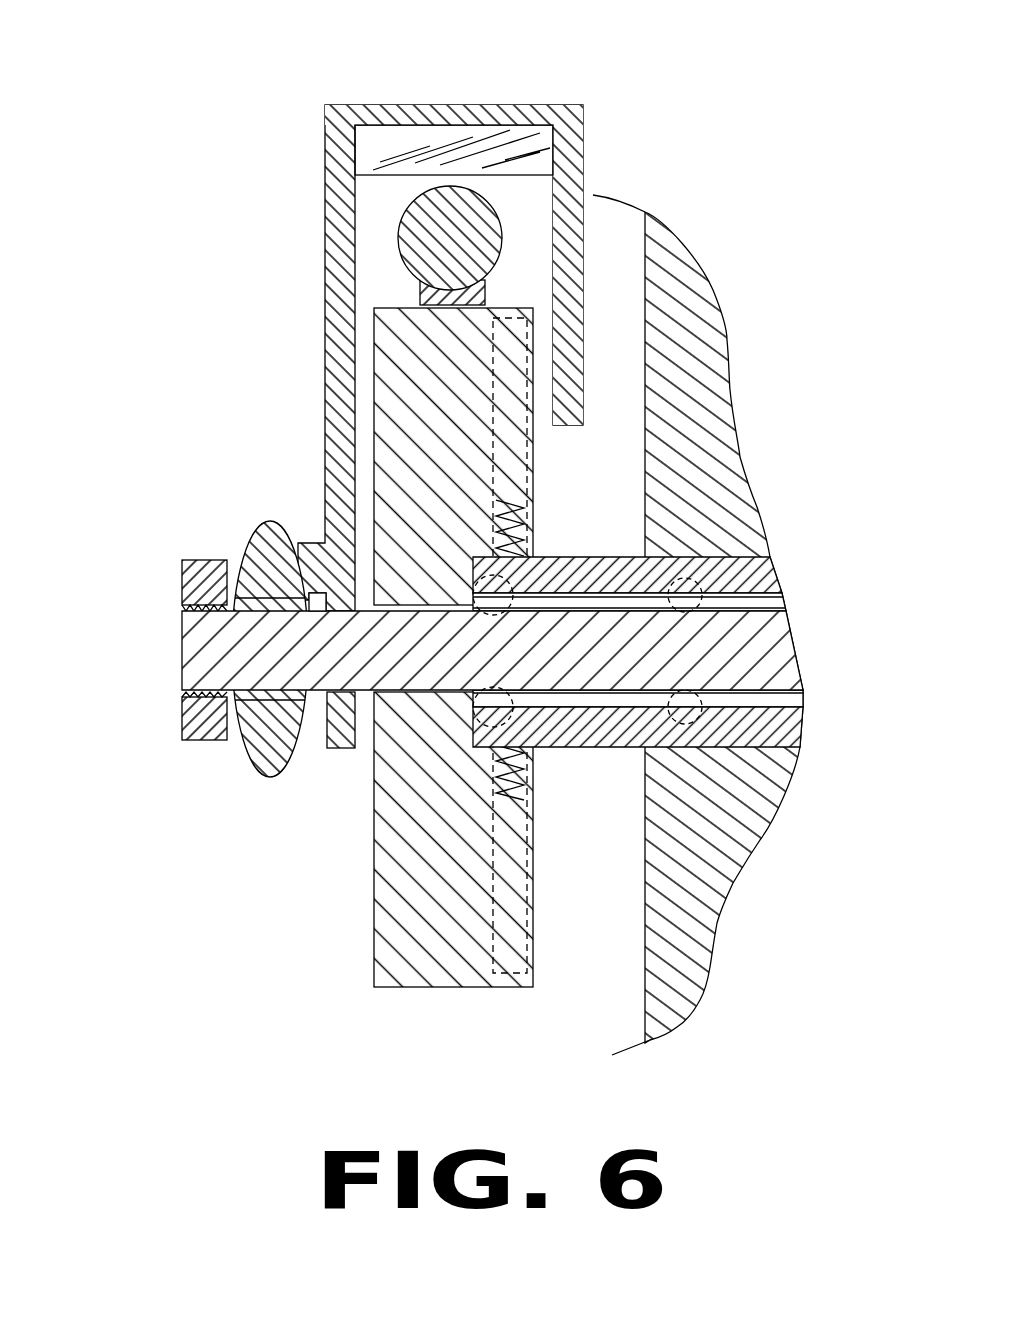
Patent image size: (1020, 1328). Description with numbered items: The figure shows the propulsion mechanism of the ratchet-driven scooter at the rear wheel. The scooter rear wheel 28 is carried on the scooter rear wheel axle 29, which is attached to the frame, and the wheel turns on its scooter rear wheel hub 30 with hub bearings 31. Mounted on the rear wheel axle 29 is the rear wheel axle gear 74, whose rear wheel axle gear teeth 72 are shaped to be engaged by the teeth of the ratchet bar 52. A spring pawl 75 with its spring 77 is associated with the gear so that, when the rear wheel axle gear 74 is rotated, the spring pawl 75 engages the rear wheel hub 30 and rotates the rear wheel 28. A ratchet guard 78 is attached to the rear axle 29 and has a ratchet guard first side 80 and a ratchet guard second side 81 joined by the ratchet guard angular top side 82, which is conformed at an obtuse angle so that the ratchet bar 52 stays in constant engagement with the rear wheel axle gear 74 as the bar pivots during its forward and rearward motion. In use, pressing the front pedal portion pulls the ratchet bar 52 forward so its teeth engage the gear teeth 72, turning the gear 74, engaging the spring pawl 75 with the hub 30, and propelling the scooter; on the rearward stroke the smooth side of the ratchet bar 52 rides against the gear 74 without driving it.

The scooter rear wheel 28 is at (697, 343).
The scooter rear wheel axle 29 is at (182, 655).
The scooter rear wheel hub 30 is at (637, 557).
The hub bearings 31 is at (510, 598).
The ratchet bar 52 is at (485, 220).
The rear wheel axle gear teeth 72 is at (513, 310).
The rear wheel axle gear 74 is at (385, 452).
The spring pawl 75 is at (535, 445).
The spring 77 is at (520, 538).
The ratchet guard 78 is at (443, 105).
The ratchet guard first side 80 is at (320, 187).
The ratchet guard second side 81 is at (583, 150).
The ratchet guard angular top side 82 is at (388, 147).